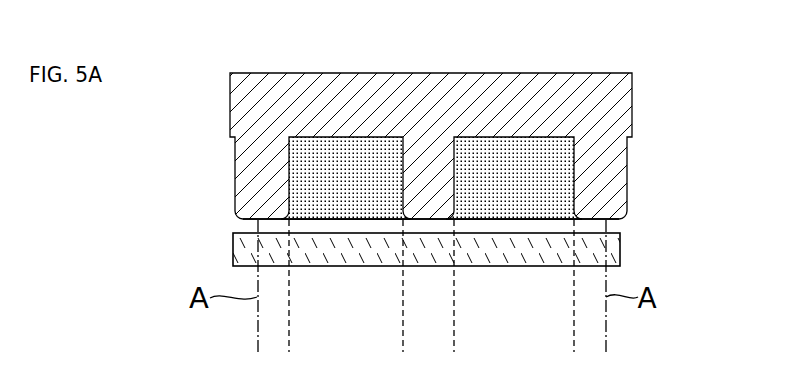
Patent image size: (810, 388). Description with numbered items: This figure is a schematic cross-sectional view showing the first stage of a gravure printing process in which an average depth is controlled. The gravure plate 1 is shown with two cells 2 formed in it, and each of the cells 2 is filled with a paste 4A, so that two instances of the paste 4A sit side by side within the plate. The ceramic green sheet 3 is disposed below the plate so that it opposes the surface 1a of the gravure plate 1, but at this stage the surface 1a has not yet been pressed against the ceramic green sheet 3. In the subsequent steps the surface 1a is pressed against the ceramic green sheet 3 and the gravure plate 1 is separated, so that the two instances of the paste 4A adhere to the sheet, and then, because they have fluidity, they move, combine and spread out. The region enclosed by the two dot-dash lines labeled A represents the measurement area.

The gravure plate 1 is at (652, 99).
The surface of the gravure plate 1a is at (610, 221).
The cells 2 is at (299, 136).
The paste 4A is at (344, 142).
The ceramic green sheet 3 is at (620, 252).